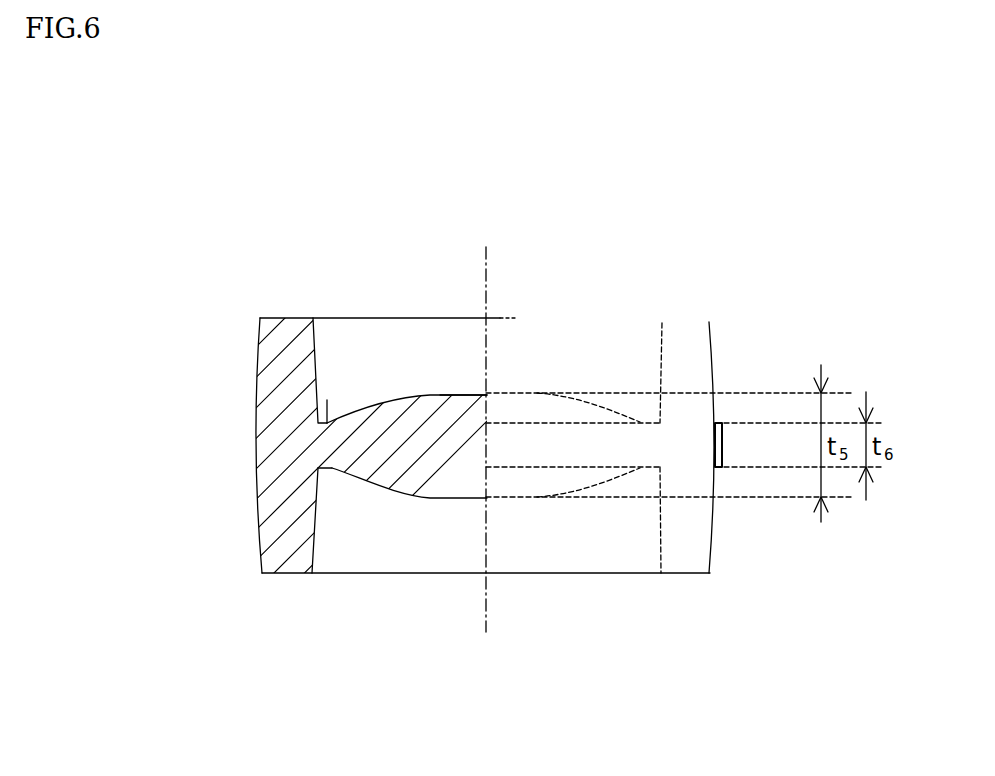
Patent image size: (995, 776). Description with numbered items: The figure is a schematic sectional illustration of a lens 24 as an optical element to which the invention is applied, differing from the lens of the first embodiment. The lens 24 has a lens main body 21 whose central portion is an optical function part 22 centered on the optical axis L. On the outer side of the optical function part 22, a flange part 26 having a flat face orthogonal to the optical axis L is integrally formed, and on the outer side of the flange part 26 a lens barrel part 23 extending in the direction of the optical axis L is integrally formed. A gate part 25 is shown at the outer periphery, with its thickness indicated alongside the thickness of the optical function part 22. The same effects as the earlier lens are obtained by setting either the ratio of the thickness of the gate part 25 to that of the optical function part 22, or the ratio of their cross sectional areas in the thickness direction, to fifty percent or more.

The lens main body 21 is at (395, 400).
The optical function part 22 is at (465, 393).
The lens barrel part 23 is at (285, 320).
The lens 24 is at (356, 389).
The gate part 25 is at (723, 440).
The flange part 26 is at (327, 400).
The optical axis L is at (487, 277).